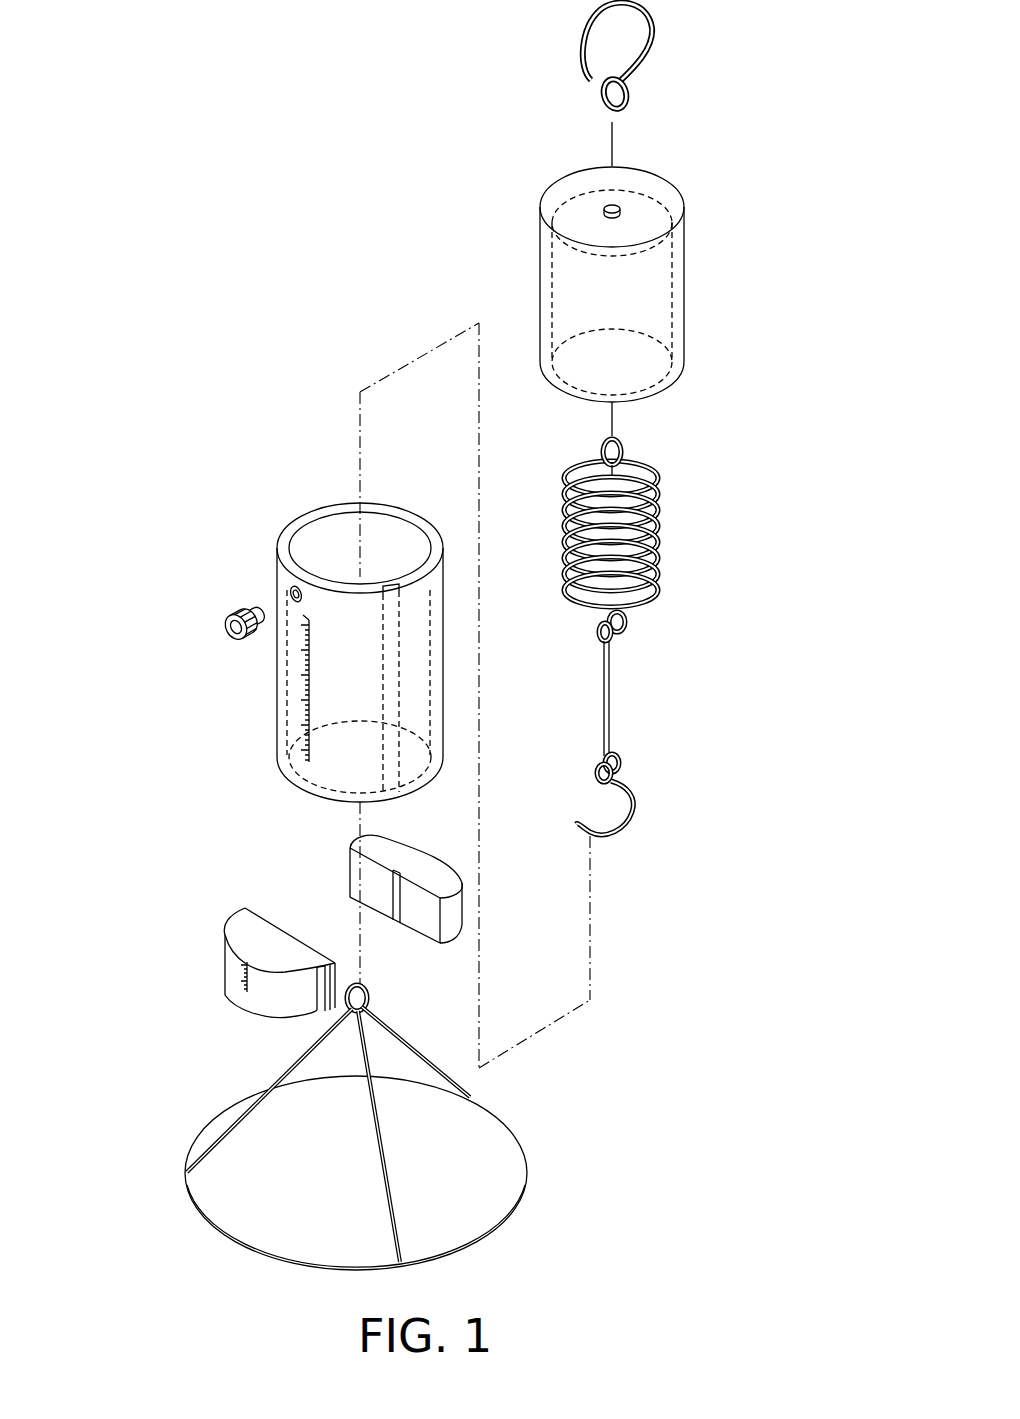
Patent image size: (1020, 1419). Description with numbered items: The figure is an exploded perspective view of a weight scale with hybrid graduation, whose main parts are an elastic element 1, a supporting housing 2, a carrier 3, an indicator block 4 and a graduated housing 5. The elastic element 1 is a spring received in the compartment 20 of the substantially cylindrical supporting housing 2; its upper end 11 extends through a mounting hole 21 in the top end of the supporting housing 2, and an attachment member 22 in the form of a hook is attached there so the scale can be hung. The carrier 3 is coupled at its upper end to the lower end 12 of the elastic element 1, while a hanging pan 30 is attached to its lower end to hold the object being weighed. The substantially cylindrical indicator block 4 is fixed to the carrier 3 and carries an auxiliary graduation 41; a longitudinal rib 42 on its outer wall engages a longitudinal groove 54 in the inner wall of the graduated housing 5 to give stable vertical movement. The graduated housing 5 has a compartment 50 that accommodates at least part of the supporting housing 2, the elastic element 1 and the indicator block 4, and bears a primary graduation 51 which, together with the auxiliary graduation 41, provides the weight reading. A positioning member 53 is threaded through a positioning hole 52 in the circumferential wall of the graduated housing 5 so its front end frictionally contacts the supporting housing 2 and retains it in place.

The elastic element 1 is at (700, 543).
The upper end 11 is at (624, 446).
The lower end 12 is at (628, 618).
The supporting housing 2 is at (697, 212).
The compartment 20 is at (676, 308).
The mounting hole 21 is at (622, 205).
The attachment member 22 is at (655, 38).
The carrier 3 is at (660, 750).
The hanging pan 30 is at (213, 1137).
The indicator block 4 is at (226, 900).
The auxiliary graduation 41 is at (243, 972).
The longitudinal rib 42 is at (320, 995).
The graduated housing 5 is at (260, 536).
The compartment 50 is at (320, 530).
The primary graduation 51 is at (290, 698).
The positioning hole 52 is at (291, 588).
The positioning member 53 is at (226, 622).
The longitudinal groove 54 is at (386, 582).